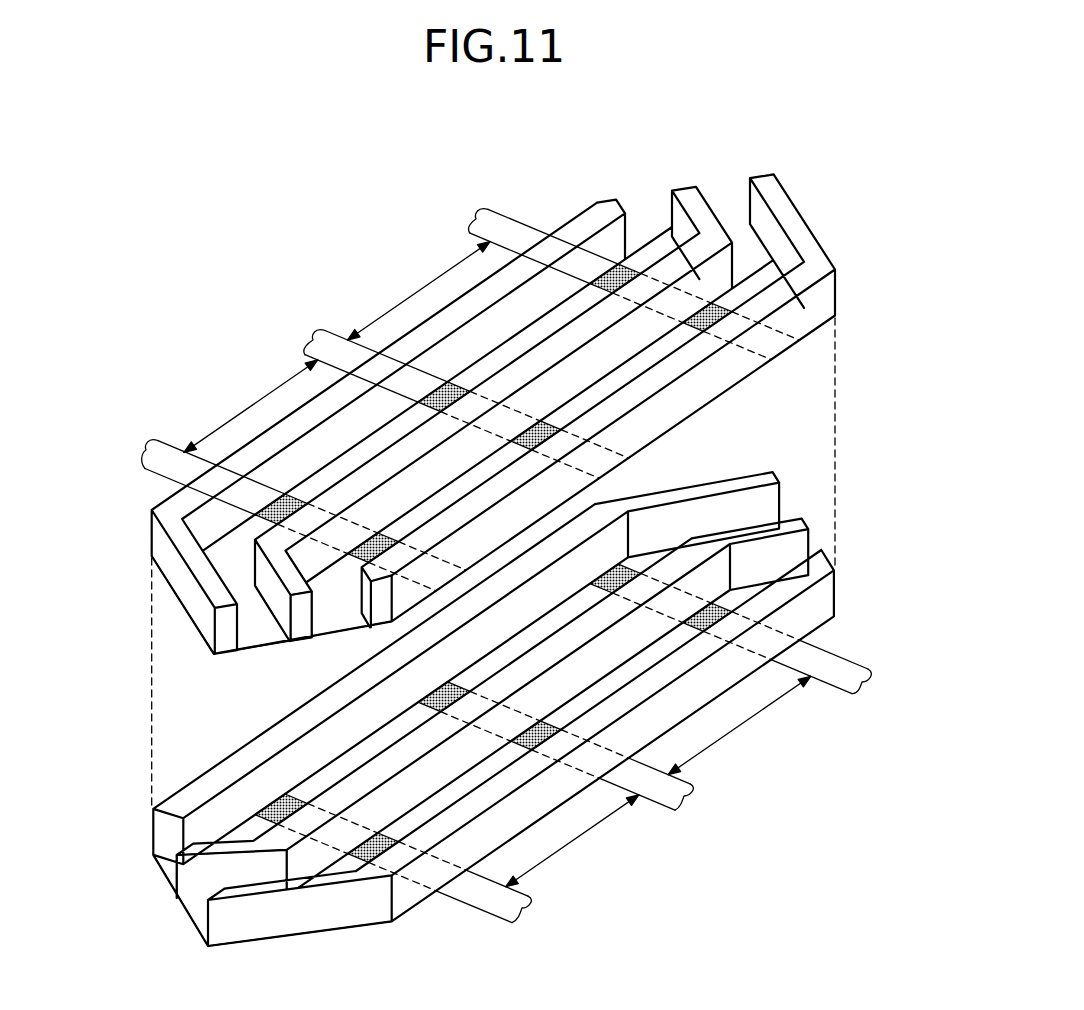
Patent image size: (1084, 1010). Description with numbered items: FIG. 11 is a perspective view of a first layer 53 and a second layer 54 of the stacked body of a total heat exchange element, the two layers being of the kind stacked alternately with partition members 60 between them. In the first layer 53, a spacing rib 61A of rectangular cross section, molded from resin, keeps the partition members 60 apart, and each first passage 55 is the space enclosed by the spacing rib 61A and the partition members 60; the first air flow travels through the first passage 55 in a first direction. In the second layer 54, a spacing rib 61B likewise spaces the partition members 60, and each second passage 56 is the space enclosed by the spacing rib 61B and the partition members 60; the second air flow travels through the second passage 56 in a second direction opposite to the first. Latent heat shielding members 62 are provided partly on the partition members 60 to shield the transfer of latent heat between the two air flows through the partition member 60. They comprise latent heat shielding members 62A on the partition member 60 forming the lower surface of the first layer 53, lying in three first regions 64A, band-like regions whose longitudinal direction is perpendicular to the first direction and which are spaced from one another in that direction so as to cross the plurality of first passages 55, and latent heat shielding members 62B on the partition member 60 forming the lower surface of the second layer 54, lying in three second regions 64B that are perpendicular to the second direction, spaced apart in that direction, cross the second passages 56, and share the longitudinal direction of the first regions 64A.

The first layer 53 is at (820, 182).
The second layer 54 is at (117, 815).
The first passage 55 is at (237, 570).
The second passage 56 is at (205, 942).
The partition member 60 is at (262, 653).
The spacing rib 61A is at (303, 628).
The spacing rib 61B is at (188, 920).
The latent heat shielding member 62 is at (905, 385).
The latent heat shielding member 62A is at (621, 276).
The latent heat shielding member 62B is at (614, 566).
The first region 64A is at (478, 221).
The second region 64B is at (866, 672).